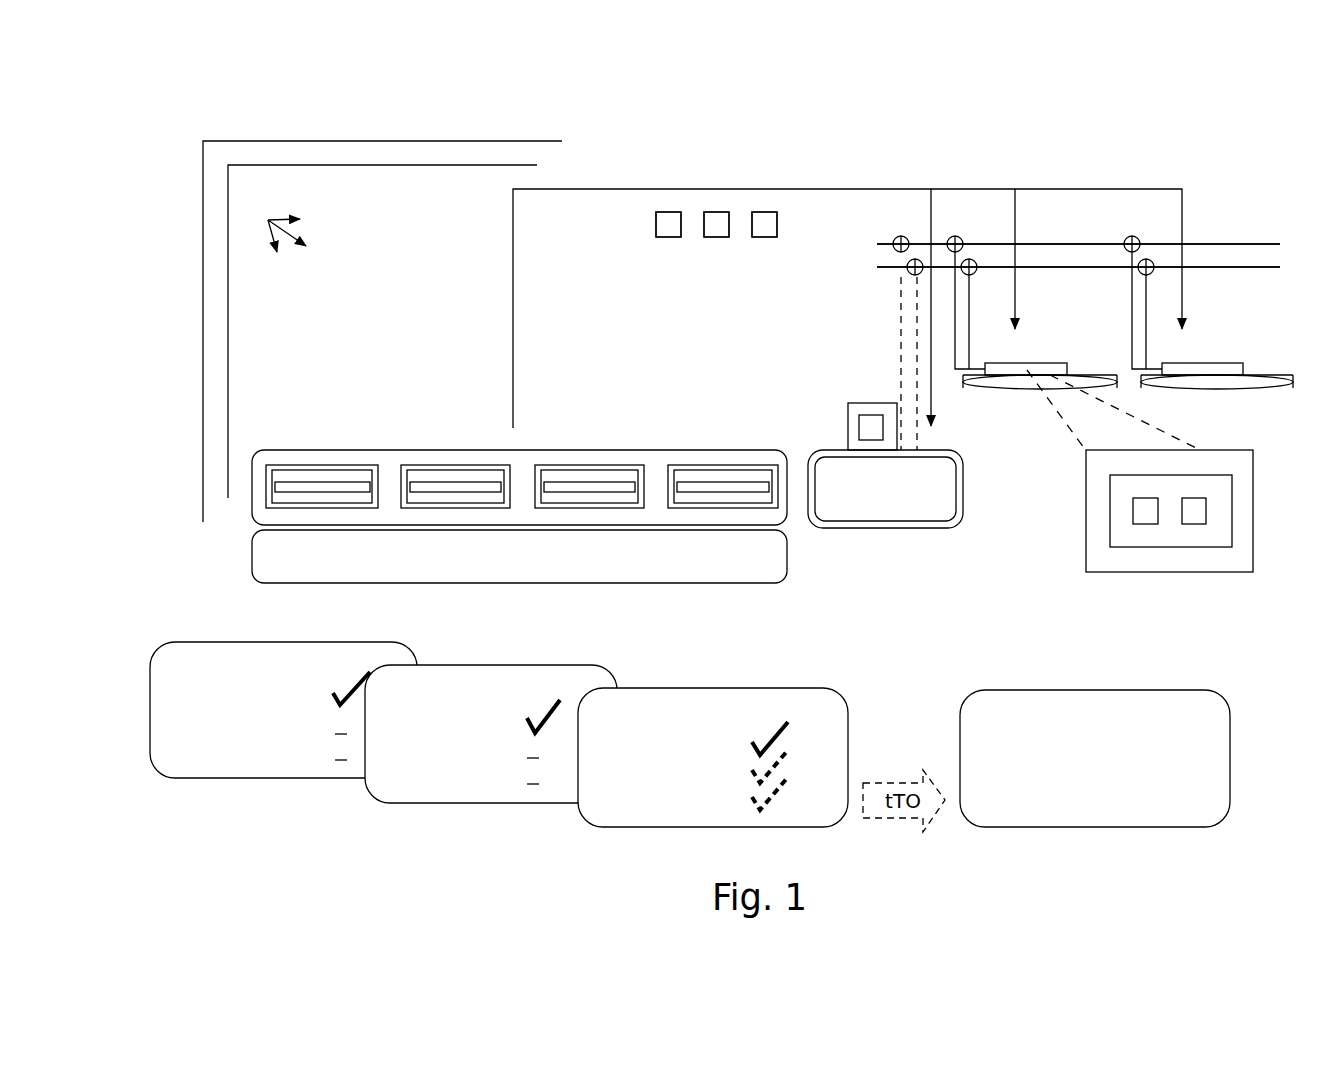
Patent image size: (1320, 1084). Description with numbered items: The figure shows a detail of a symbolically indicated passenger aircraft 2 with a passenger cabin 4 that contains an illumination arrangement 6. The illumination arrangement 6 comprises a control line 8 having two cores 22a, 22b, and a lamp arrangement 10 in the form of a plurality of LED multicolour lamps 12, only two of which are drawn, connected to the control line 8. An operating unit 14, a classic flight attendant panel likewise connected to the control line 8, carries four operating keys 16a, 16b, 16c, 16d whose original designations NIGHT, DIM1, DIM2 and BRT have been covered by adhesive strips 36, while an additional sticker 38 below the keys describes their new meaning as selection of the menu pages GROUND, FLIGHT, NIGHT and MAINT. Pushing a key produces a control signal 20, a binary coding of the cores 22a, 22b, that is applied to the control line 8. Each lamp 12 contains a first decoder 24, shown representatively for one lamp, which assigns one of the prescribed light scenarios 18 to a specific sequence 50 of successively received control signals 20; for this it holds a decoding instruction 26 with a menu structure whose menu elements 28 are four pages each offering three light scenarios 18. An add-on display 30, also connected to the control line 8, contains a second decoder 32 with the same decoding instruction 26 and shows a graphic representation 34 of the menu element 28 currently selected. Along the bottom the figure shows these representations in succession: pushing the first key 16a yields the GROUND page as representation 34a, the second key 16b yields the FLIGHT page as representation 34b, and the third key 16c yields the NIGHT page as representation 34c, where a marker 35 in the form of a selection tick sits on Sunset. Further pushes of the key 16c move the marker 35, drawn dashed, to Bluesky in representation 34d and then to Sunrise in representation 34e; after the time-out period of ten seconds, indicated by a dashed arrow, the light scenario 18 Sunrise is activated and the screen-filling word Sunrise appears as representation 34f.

The passenger aircraft 2 is at (203, 235).
The passenger cabin 4 is at (228, 297).
The illumination arrangement 6 is at (277, 229).
The control line 8 is at (845, 272).
The lamp arrangement 10 is at (1072, 206).
The LED multicolour lamp 12 is at (1060, 362).
The operating unit 14 is at (407, 450).
The operating key 16a is at (343, 465).
The operating key 16b is at (452, 465).
The operating key 16c is at (590, 465).
The operating key 16d is at (732, 465).
The light scenario 18 is at (232, 683).
The control signal 20 is at (764, 237).
The core 22a is at (1200, 242).
The core 22b is at (1217, 270).
The first decoder 24 is at (1085, 487).
The decoding instruction 26 is at (858, 426).
The menu element 28 is at (1169, 556).
The add-on display 30 is at (941, 530).
The second decoder 32 is at (870, 403).
The graphic representation 34 is at (872, 528).
The graphic representation 34a is at (250, 642).
The graphic representation 34b is at (470, 665).
The graphic representation 34c is at (661, 688).
The graphic representation 34d is at (797, 746).
The graphic representation 34e is at (797, 780).
The graphic representation 34f is at (1075, 690).
The marker 35 is at (340, 703).
The adhesive strip 36 is at (280, 482).
The additional sticker 38 is at (332, 583).
The sequence of control signals 50 is at (640, 250).